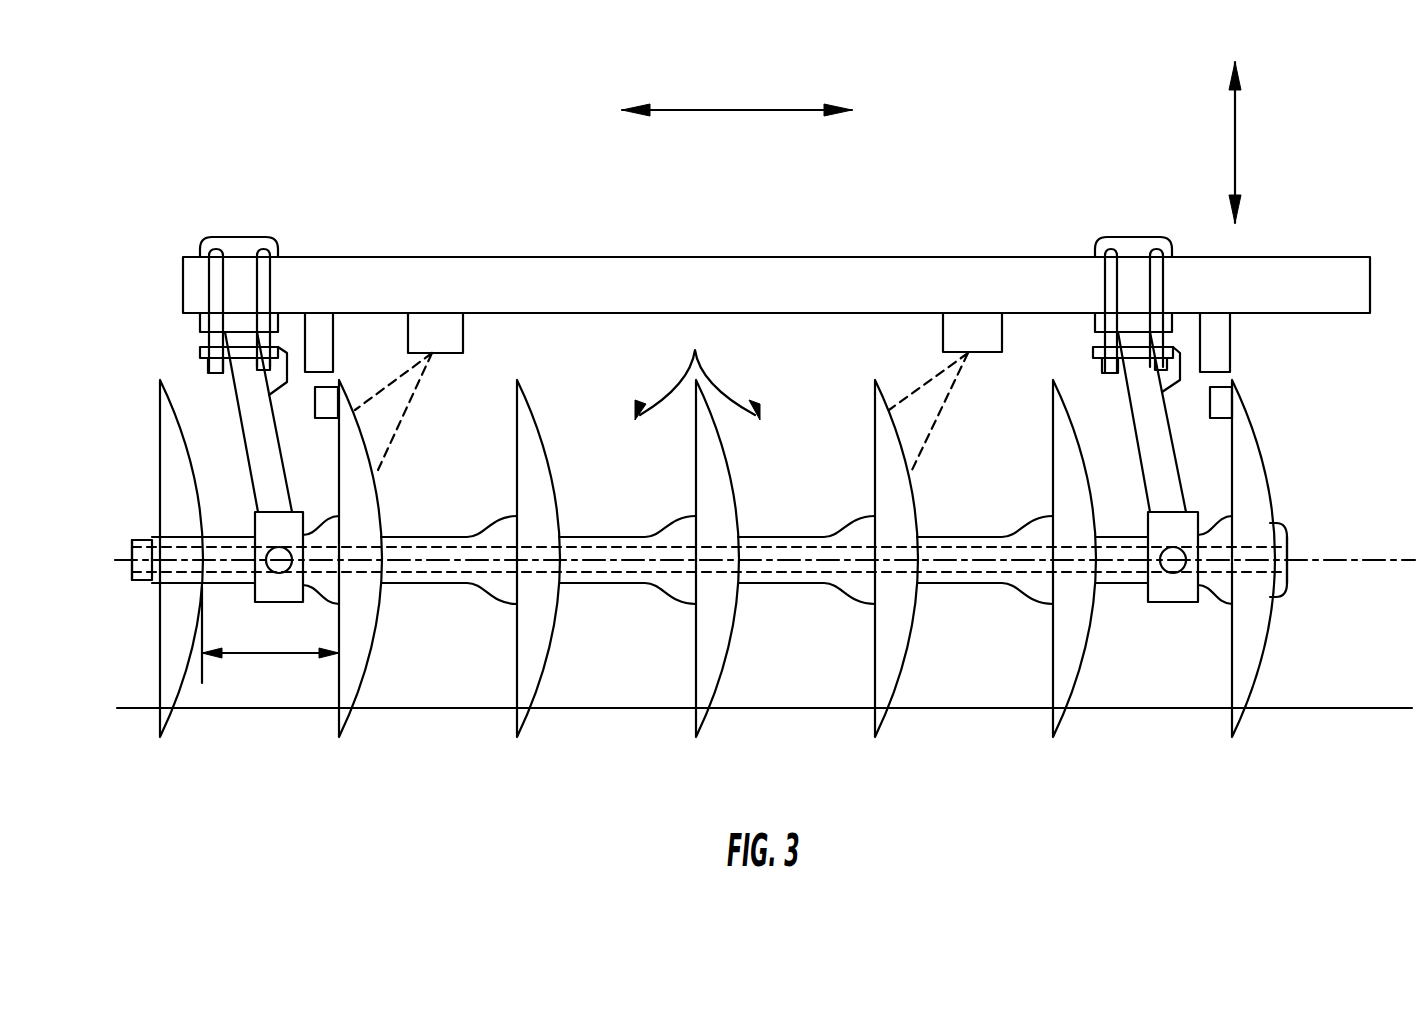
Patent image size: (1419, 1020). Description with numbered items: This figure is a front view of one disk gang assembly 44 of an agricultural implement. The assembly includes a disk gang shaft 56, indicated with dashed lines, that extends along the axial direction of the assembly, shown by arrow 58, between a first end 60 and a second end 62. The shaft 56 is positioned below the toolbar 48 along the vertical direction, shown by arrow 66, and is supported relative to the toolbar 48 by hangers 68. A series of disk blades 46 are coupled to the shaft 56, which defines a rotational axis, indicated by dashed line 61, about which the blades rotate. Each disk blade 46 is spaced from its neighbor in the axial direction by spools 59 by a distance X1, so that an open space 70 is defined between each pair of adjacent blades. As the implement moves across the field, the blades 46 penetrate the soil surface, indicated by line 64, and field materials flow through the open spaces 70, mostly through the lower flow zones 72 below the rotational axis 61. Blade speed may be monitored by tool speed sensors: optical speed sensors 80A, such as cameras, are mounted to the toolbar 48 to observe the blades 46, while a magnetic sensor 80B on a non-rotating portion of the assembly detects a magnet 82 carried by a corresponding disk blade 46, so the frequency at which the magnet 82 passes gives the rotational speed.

The disk gang assembly 44 is at (190, 200).
The disk blade 46 is at (160, 737).
The toolbar 48 is at (595, 256).
The disk gang shaft 56 is at (1118, 570).
The axial direction arrow 58 is at (727, 108).
The spool 59 is at (450, 583).
The first end 60 is at (95, 550).
The rotational axis 61 is at (1368, 560).
The second end 62 is at (1305, 540).
The soil surface line 64 is at (1308, 705).
The vertical direction arrow 66 is at (1235, 155).
The hanger 68 is at (245, 410).
The open space 70 is at (697, 369).
The lower flow zone 72 is at (437, 678).
The optical speed sensor 80A is at (427, 325).
The magnetic sensor 80B is at (322, 330).
The magnet 82 is at (328, 408).
The blade spacing distance X1 is at (248, 655).